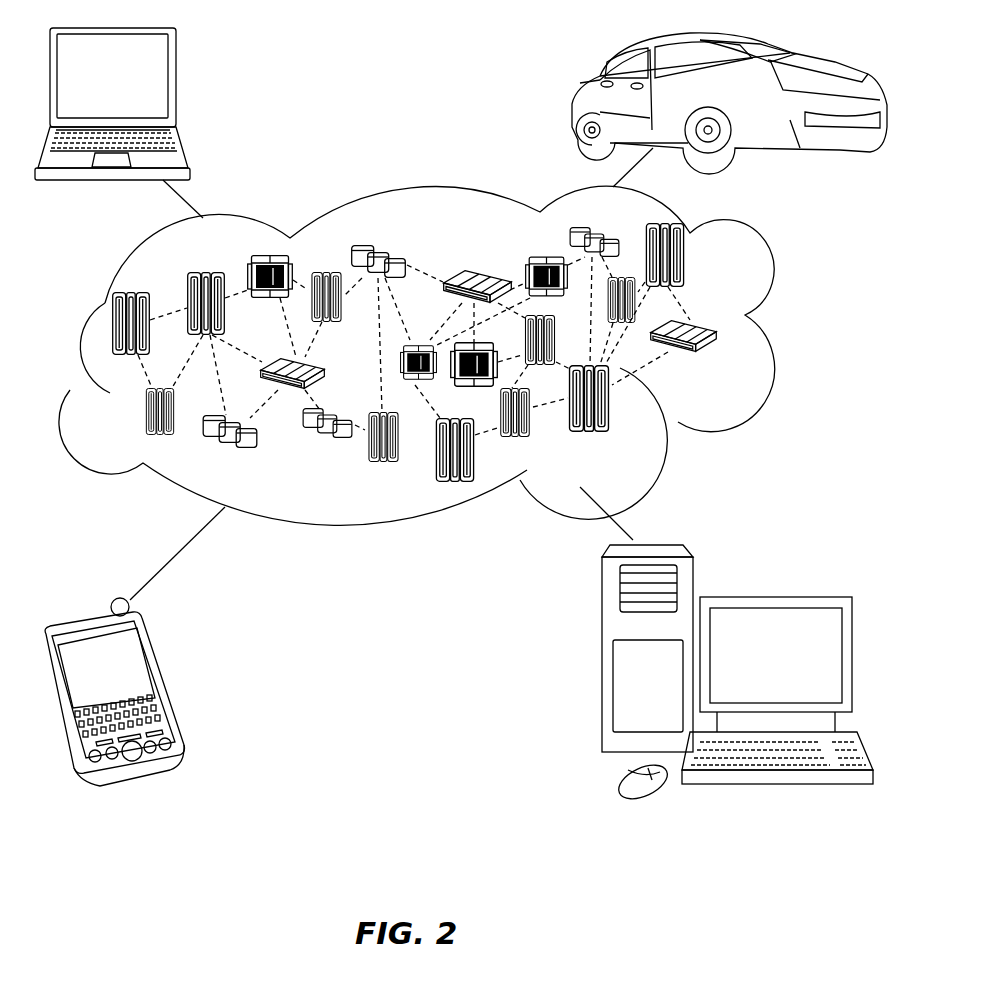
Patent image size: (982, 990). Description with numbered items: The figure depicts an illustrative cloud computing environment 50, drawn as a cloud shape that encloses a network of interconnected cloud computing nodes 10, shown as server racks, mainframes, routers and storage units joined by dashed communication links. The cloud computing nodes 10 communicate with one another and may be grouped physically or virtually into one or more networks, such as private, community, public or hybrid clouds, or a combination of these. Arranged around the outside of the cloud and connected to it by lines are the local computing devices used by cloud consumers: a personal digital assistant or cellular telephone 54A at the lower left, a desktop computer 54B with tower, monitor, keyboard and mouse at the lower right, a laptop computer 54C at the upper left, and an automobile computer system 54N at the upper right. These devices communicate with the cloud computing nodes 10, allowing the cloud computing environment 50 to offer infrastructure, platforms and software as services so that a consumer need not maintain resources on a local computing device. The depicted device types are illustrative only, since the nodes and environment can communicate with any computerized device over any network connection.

The cloud computing nodes 10 is at (724, 359).
The cloud computing environment 50 is at (773, 334).
The personal digital assistant (PDA) or cellular telephone 54A is at (165, 676).
The desktop computer 54B is at (771, 597).
The laptop computer 54C is at (175, 82).
The automobile computer system 54N is at (572, 97).